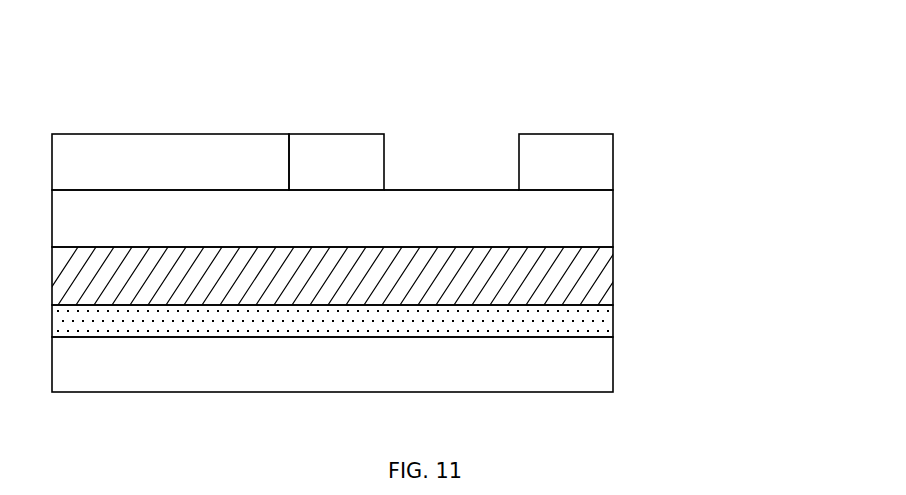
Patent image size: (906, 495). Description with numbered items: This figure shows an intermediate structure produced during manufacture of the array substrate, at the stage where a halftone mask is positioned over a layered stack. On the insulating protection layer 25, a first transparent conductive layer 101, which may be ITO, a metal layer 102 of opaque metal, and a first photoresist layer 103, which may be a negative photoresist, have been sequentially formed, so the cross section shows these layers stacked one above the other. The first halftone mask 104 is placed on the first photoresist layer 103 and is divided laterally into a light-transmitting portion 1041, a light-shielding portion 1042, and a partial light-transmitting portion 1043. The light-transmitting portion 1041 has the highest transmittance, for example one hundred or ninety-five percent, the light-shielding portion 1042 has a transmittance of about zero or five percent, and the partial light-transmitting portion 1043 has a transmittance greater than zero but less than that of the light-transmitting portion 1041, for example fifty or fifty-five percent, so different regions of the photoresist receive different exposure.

The first halftone mask 104 is at (332, 95).
The partial light-transmitting portion 1043 is at (150, 142).
The light-shielding portion 1042 is at (340, 142).
The light-transmitting portion 1041 is at (451, 118).
The first photoresist layer 103 is at (603, 218).
The metal layer 102 is at (603, 277).
The first transparent conductive layer 101 is at (603, 323).
The insulating protection layer 25 is at (603, 367).